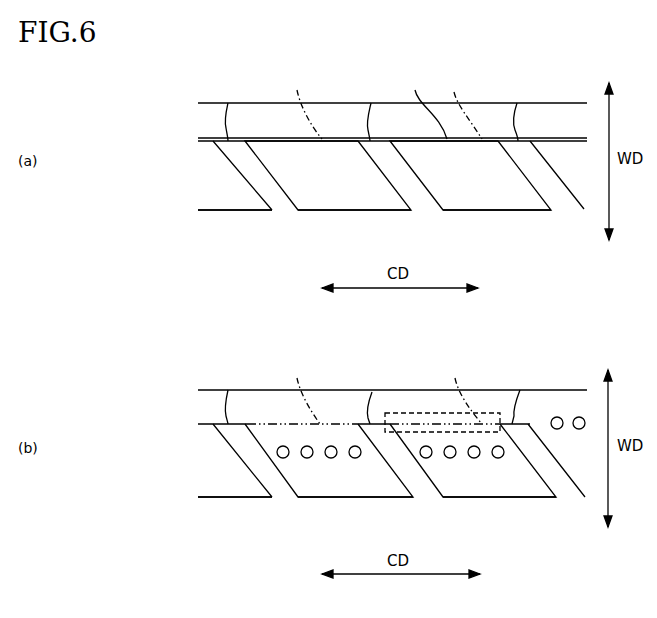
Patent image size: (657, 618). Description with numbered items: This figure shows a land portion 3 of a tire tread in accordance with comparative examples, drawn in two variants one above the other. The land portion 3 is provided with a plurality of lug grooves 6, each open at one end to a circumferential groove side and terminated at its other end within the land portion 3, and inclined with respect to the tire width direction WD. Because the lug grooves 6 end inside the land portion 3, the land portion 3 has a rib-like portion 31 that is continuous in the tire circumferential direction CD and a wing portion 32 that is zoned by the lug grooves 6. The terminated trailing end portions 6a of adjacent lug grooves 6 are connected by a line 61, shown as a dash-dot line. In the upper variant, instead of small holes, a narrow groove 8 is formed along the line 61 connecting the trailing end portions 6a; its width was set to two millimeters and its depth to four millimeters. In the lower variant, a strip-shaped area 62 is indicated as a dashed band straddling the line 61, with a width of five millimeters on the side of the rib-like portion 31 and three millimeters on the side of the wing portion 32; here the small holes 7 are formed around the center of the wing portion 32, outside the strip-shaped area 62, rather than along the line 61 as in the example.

The land portion 3 is at (192, 147).
The rib-like portion 31 is at (208, 122).
The wing portion 32 is at (207, 183).
The lug groove 6 is at (277, 202).
The trailing end portion 6a is at (228, 103).
The line 61 is at (385, 247).
The narrow groove 8 is at (428, 105).
The strip-shaped area 62 is at (433, 413).
The small hole 7 is at (331, 458).